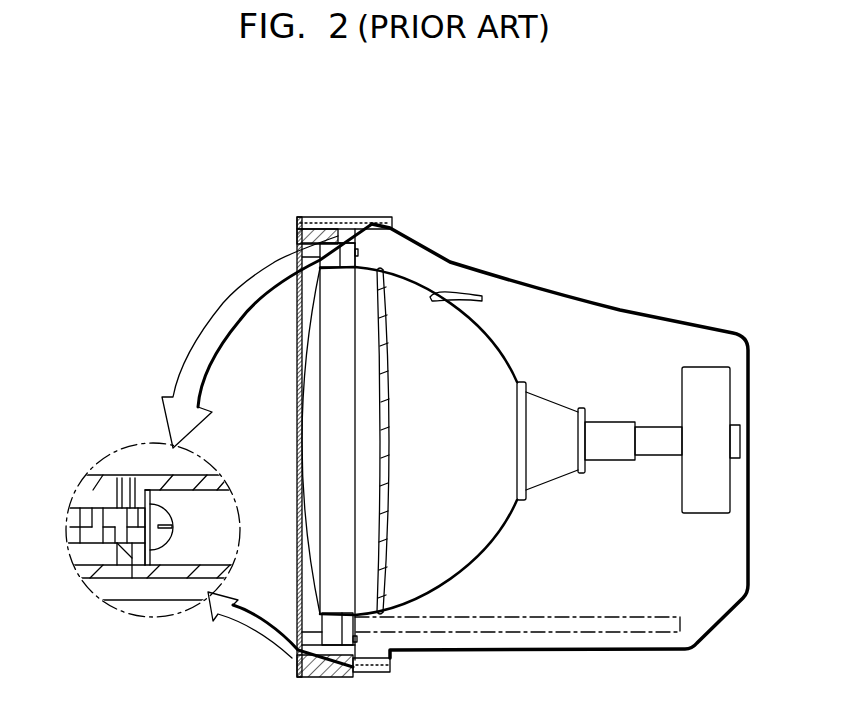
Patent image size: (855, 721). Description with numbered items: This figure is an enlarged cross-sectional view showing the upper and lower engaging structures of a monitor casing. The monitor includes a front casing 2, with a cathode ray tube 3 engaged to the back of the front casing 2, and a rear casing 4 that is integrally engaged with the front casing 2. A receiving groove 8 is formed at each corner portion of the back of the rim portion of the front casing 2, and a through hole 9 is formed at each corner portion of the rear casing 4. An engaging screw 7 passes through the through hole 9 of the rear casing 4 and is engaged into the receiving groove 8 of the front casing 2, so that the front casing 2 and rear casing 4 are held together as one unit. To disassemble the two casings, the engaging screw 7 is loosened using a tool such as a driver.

The front casing 2 is at (297, 226).
The cathode ray tube 3 is at (407, 287).
The rear casing 4 is at (648, 314).
The engaging screw 7 is at (70, 531).
The receiving groove 8 is at (120, 505).
The through hole 9 is at (133, 505).